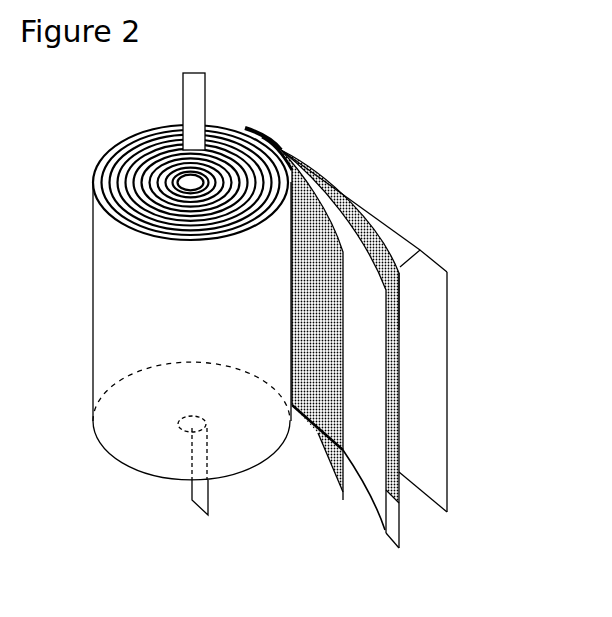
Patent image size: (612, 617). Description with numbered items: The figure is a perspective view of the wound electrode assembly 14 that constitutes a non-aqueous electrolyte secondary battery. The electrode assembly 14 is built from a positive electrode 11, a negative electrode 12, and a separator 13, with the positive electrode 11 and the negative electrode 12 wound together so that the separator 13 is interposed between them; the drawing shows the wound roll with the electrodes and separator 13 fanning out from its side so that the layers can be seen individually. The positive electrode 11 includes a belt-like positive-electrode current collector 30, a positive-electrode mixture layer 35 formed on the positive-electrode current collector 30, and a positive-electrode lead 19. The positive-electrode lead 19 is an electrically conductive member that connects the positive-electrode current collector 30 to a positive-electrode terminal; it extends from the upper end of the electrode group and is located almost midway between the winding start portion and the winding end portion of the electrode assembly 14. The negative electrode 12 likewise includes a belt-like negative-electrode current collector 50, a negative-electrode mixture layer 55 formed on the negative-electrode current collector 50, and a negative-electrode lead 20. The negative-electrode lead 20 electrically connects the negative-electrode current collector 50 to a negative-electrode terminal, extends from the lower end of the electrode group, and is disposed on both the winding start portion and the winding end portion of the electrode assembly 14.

The positive electrode 11 is at (318, 199).
The negative electrode 12 is at (388, 250).
The separator 13 is at (365, 380).
The electrode assembly 14 is at (453, 53).
The positive-electrode lead 19 is at (188, 83).
The negative-electrode lead 20 is at (195, 493).
The positive-electrode current collector 30 is at (343, 460).
The positive-electrode mixture layer 35 is at (322, 440).
The negative-electrode current collector 50 is at (423, 250).
The negative-electrode mixture layer 55 is at (399, 300).